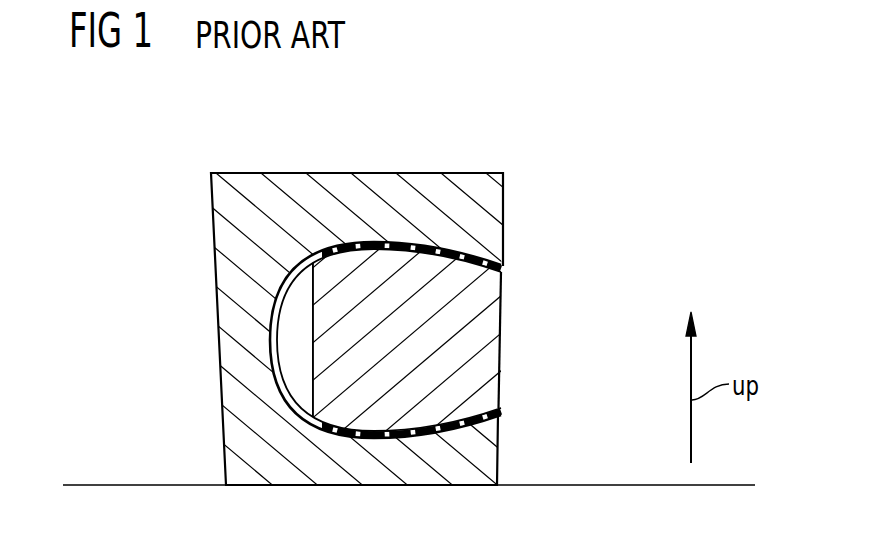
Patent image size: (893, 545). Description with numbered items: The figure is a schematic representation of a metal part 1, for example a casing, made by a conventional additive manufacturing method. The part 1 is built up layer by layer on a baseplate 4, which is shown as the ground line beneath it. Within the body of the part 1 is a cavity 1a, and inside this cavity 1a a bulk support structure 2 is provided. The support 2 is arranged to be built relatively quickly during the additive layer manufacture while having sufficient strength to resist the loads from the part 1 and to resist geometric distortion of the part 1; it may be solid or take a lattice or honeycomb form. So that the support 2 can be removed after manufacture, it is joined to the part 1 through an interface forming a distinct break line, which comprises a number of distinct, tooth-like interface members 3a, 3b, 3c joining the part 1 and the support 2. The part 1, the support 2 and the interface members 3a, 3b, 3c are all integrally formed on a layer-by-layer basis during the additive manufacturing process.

The metal part 1 is at (224, 229).
The cavity 1a is at (270, 345).
The bulk support structure 2 is at (488, 330).
The interface member 3a is at (488, 262).
The interface member 3b is at (458, 256).
The interface member 3c is at (437, 250).
The baseplate 4 is at (139, 498).